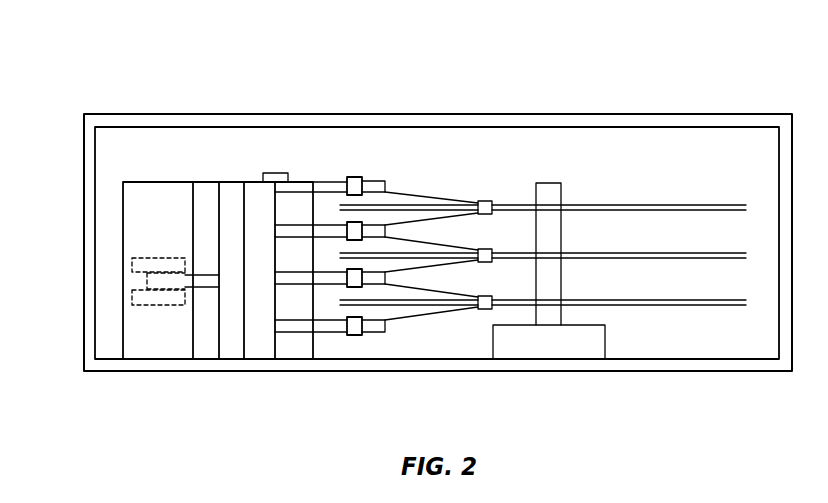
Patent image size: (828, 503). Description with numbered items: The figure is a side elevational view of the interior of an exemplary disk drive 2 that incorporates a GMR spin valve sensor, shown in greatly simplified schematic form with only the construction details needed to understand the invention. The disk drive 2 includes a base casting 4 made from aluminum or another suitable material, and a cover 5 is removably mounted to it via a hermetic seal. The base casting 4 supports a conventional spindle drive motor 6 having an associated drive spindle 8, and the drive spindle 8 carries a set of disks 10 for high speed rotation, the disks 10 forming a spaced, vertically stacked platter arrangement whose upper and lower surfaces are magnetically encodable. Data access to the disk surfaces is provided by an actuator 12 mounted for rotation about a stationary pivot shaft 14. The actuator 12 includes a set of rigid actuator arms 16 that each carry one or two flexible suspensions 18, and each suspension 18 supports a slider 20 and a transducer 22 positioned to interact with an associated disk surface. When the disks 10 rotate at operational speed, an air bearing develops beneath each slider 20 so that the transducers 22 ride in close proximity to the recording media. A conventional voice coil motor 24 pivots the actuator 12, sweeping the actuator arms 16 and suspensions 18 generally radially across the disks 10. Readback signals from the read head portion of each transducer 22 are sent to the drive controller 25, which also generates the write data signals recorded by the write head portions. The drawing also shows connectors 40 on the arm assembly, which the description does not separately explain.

The disk drive 2 is at (74, 50).
The base casting 4 is at (328, 360).
The cover 5 is at (188, 114).
The spindle drive motor 6 is at (606, 347).
The drive spindle 8 is at (563, 193).
The disks 10 is at (672, 205).
The actuator 12 is at (257, 355).
The stationary pivot shaft 14 is at (265, 172).
The actuator arms 16 is at (333, 181).
The flexible suspensions 18 is at (424, 176).
The slider 20 is at (486, 186).
The transducer 22 is at (488, 194).
The voice coil motor 24 is at (145, 281).
The drive controller 25 is at (185, 260).
The ferrule connectors 40 is at (357, 177).